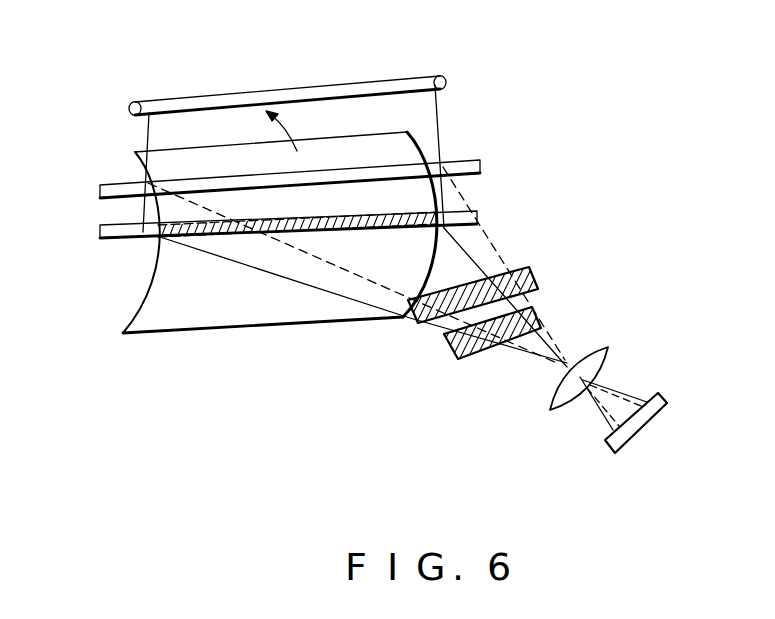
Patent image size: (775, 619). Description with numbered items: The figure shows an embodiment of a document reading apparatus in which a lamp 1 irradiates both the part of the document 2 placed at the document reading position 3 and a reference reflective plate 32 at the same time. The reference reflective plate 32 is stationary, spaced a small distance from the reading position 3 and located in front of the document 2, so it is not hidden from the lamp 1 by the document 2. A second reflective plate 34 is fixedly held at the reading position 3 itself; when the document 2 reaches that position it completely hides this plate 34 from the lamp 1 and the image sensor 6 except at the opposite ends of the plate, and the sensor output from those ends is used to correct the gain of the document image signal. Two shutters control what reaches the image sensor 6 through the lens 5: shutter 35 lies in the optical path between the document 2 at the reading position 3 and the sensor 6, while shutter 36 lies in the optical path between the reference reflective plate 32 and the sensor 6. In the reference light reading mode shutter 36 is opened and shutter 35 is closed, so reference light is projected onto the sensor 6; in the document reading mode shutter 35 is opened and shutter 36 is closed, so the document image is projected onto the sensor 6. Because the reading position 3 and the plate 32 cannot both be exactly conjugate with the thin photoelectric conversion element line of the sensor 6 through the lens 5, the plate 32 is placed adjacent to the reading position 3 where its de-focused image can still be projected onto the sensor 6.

The lamp 1 is at (364, 81).
The document 2 is at (342, 143).
The document reading position 3 is at (325, 235).
The reference reflective plate 32 is at (480, 162).
The reflective plate 34 is at (479, 213).
The shutter 36 is at (532, 274).
The shutter 35 is at (538, 315).
The lens 5 is at (610, 348).
The image sensor 6 is at (664, 400).